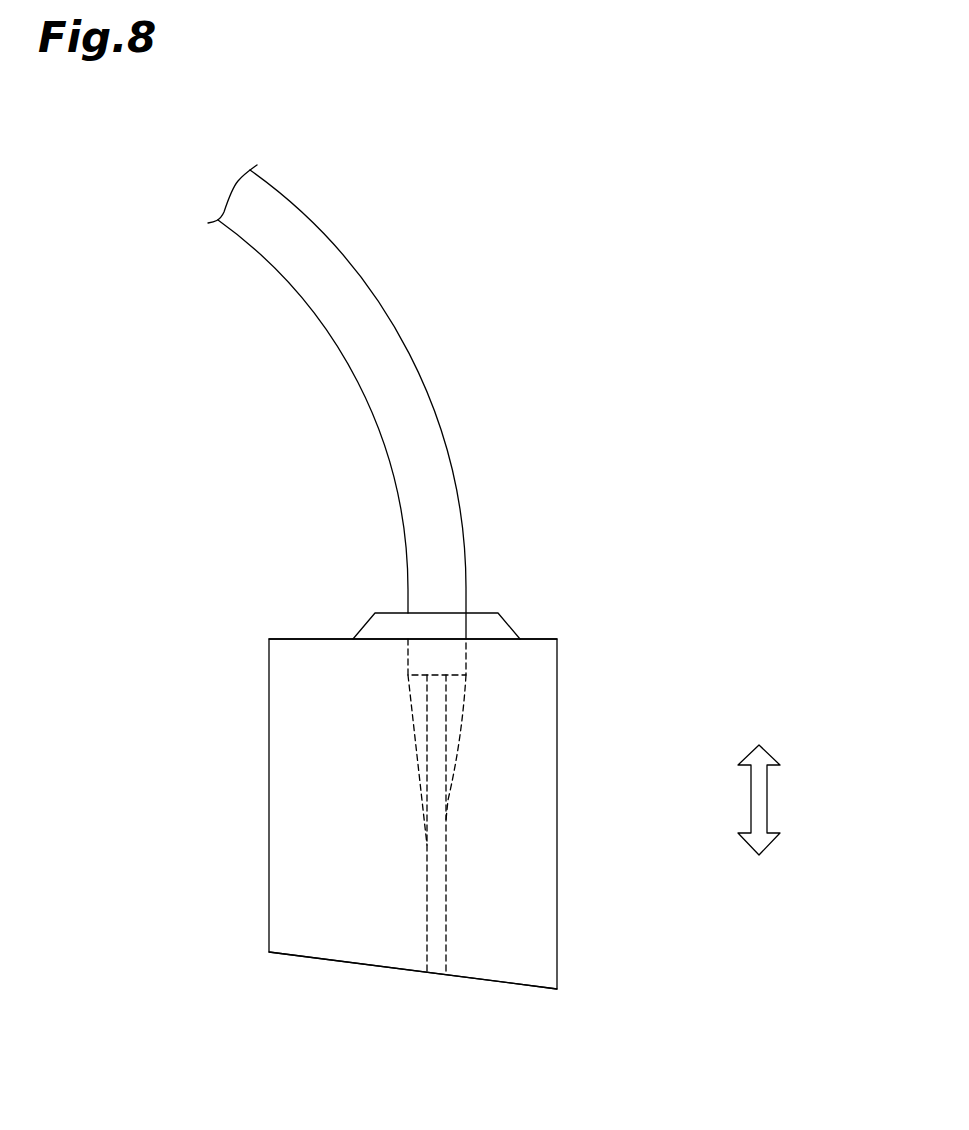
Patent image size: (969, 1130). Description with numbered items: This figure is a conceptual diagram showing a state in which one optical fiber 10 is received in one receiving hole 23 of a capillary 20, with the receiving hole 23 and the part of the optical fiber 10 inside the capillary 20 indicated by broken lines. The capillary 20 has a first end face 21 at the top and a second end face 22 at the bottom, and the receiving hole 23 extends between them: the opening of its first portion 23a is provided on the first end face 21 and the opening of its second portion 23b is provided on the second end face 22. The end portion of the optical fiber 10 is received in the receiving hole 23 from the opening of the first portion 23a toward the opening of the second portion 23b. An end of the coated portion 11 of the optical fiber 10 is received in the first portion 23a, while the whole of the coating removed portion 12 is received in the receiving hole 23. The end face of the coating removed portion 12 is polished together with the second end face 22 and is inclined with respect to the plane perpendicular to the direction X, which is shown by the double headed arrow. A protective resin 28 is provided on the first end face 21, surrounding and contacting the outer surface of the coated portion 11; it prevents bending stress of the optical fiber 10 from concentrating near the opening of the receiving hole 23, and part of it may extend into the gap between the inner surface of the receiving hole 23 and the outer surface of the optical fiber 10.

The optical fiber 10 is at (647, 643).
The coated portion 11 is at (473, 652).
The coating removed portion 12 is at (455, 752).
The capillary 20 is at (258, 638).
The first end face 21 is at (293, 639).
The second end face 22 is at (353, 963).
The receiving hole 23 is at (289, 824).
The first portion 23a is at (417, 707).
The second portion 23b is at (433, 850).
The protective resin 28 is at (403, 613).
The direction X is at (768, 800).